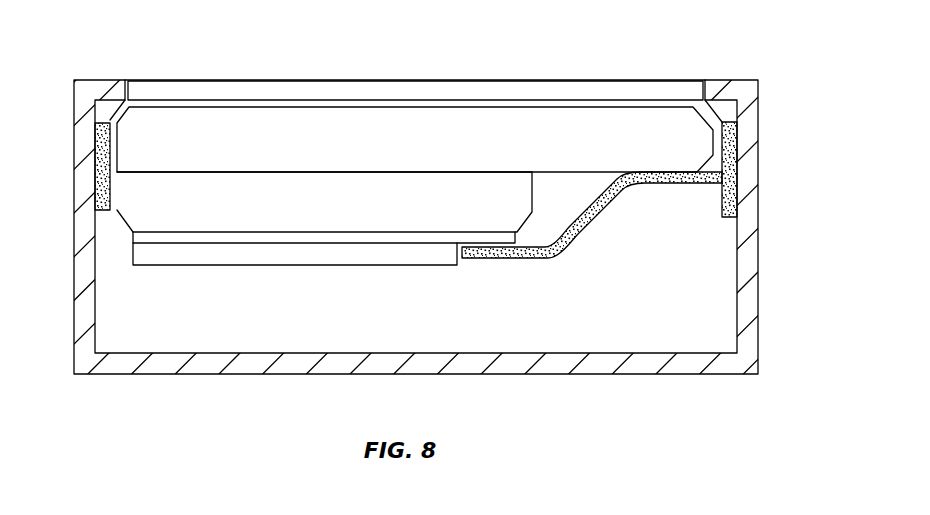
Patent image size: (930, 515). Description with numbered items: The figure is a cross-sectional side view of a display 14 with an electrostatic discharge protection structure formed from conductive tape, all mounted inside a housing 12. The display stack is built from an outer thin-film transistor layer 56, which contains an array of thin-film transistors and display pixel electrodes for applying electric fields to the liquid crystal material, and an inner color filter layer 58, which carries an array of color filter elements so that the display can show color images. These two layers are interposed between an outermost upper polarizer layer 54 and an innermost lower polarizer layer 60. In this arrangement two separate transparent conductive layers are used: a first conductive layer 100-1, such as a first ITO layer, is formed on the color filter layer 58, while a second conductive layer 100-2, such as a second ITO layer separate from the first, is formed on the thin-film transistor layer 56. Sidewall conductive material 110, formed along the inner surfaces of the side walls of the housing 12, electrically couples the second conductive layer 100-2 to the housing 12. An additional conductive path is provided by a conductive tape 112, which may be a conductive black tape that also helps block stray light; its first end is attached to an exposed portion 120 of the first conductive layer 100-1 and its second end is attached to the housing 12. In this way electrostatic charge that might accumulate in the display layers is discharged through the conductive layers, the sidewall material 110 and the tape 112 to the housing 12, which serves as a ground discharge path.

The housing 12 is at (750, 136).
The display 14 is at (416, 159).
The upper polarizer layer 54 is at (417, 88).
The thin-film transistor layer 56 is at (459, 146).
The color filter layer 58 is at (459, 205).
The lower polarizer layer 60 is at (188, 257).
The first conductive layer 100-1 is at (382, 238).
The second conductive layer 100-2 is at (178, 107).
The sidewall conductive material 110 is at (94, 167).
The conductive tape 112 is at (597, 218).
The exposed portion 120 is at (515, 268).